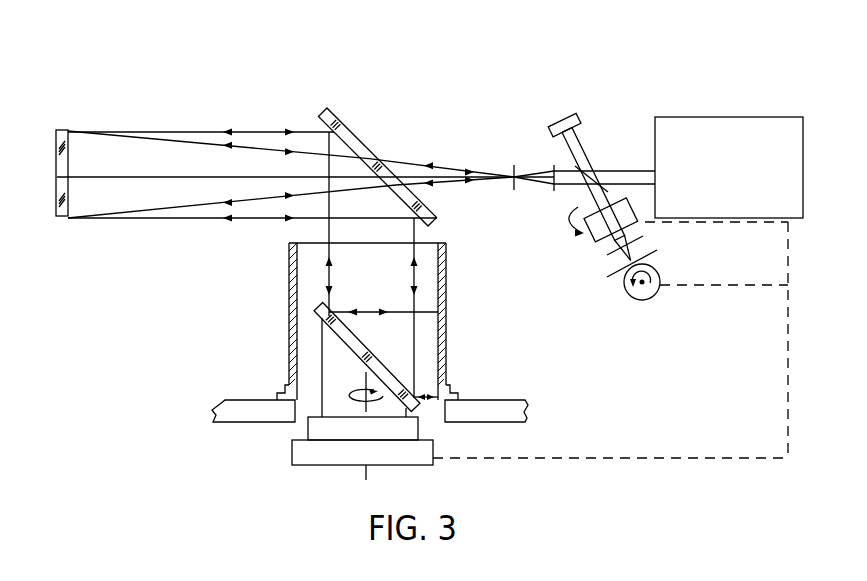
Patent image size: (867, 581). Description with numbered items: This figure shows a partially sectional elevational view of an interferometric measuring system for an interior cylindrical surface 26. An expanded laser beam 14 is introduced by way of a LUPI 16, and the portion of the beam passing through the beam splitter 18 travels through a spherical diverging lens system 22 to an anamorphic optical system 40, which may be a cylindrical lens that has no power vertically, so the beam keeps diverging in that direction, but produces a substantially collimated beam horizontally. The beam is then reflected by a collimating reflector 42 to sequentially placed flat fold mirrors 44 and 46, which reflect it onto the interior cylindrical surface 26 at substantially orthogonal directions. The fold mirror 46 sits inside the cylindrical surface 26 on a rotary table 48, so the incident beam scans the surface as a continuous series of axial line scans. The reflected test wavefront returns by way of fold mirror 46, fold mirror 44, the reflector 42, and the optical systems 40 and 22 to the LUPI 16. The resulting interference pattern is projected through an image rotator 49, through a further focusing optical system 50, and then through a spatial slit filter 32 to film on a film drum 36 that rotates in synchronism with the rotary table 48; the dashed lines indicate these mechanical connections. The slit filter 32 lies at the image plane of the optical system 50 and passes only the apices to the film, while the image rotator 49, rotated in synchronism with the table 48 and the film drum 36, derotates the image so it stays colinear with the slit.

The expanded laser beam 14 is at (622, 170).
The LUPI 16 is at (675, 95).
The beam splitter 18 is at (568, 160).
The spherical diverging lens system 22 is at (516, 165).
The interior cylindrical surface 26 is at (446, 376).
The spatial slit filter 32 is at (657, 250).
The film drum 36 is at (625, 340).
The anamorphic optical system 40 is at (516, 191).
The collimating reflector 42 is at (56, 216).
The flat fold mirror 44 is at (362, 150).
The flat fold mirror 46 is at (320, 315).
The rotary table 48 is at (418, 428).
The image rotator 49 is at (600, 238).
The focusing optical system 50 is at (638, 236).